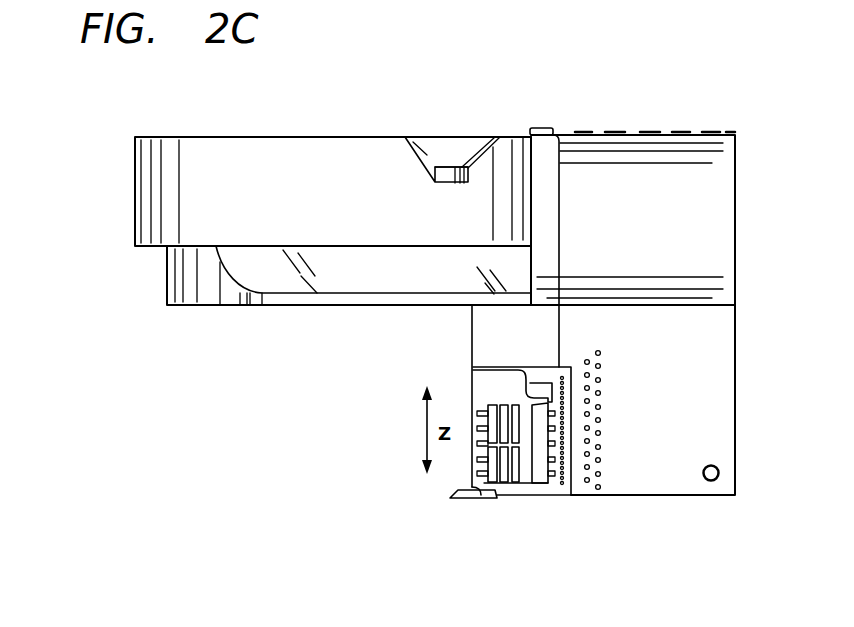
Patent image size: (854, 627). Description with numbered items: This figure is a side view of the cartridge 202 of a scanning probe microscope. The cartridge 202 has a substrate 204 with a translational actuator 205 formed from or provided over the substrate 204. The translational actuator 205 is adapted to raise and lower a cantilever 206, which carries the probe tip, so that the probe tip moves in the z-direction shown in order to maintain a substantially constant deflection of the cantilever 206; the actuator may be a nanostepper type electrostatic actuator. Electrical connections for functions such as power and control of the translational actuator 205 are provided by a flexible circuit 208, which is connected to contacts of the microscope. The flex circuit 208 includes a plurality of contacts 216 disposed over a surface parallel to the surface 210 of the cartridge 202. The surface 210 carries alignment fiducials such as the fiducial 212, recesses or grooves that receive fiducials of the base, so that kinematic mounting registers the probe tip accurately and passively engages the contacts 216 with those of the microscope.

The cartridge 202 is at (376, 182).
The substrate 204 is at (543, 372).
The translational actuator 205 is at (500, 386).
The cantilever 206 is at (450, 503).
The flexible circuit 208 is at (605, 192).
The surface 210 is at (283, 148).
The alignment fiducial 212 is at (448, 152).
The contacts 216 is at (647, 270).